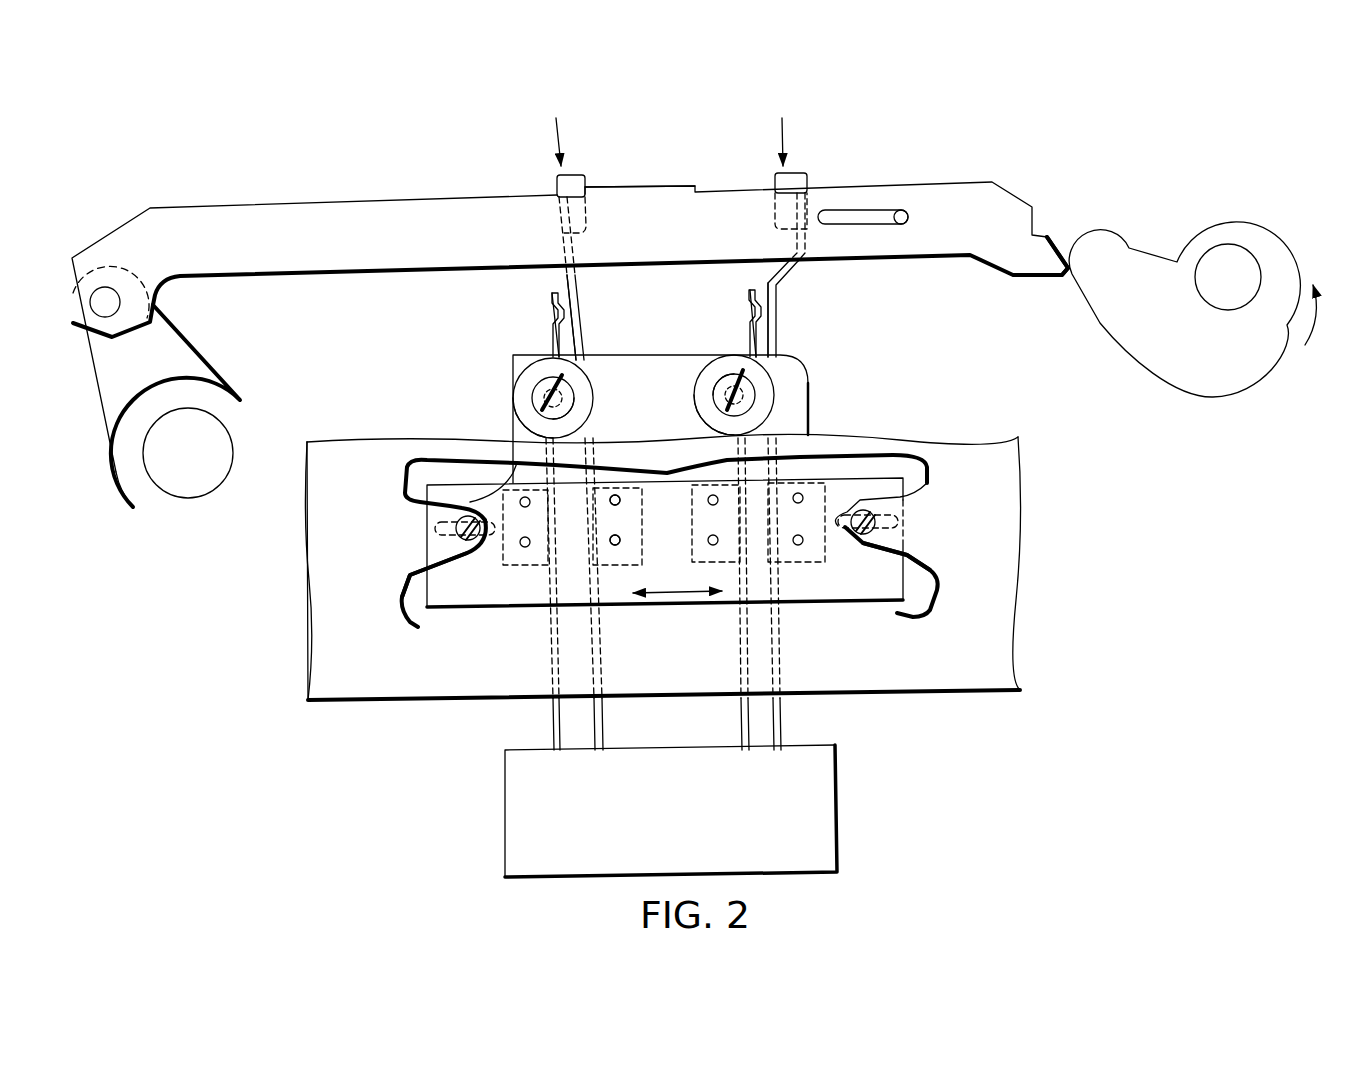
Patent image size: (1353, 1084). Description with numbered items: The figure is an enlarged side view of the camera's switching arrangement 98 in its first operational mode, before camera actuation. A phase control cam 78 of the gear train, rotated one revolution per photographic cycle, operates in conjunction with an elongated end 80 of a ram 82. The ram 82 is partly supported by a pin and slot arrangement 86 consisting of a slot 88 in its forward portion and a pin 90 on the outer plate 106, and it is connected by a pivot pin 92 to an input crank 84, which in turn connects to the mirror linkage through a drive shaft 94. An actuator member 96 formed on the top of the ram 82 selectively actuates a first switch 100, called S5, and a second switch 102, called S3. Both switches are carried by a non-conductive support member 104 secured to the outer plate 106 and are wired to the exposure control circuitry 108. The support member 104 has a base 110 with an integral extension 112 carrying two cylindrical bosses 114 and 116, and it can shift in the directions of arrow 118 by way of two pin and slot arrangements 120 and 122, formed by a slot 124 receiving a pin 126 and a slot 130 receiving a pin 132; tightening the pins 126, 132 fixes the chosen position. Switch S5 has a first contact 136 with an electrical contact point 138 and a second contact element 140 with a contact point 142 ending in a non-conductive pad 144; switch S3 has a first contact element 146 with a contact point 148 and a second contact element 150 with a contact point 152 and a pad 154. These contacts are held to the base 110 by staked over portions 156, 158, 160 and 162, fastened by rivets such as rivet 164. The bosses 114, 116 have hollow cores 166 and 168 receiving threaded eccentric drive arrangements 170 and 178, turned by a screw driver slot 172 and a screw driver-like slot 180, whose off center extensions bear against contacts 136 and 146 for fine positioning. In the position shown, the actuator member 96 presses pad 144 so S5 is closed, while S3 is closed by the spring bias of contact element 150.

The phase control cam 78 is at (1240, 383).
The elongated end 80 is at (1050, 262).
The ram 82 is at (428, 205).
The input crank 84 is at (188, 365).
The pin and slot arrangement 86 is at (860, 182).
The slot 88 is at (846, 218).
The pin 90 is at (905, 221).
The pivot pin 92 is at (105, 302).
The drive shaft 94 is at (217, 442).
The actuator member 96 is at (635, 187).
The switching arrangement 98 is at (287, 570).
The first switch 100 is at (543, 318).
The second switch 102 is at (783, 318).
The support member 104 is at (888, 489).
The outer plate 106 is at (1000, 618).
The exposure control circuitry 108 is at (823, 778).
The base 110 is at (487, 598).
The extension 112 is at (800, 407).
The boss 114 is at (532, 370).
The boss 116 is at (722, 363).
The arrow 118 is at (673, 594).
The pin and slot arrangement 120 is at (460, 563).
The pin and slot arrangement 122 is at (867, 552).
The slot 124 is at (492, 542).
The pin 126 is at (467, 517).
The slot 130 is at (853, 513).
The pin 132 is at (847, 533).
The first contact 136 is at (547, 618).
The electrical contact point 138 is at (553, 310).
The second contact element 140 is at (600, 632).
The electrical contact point 142 is at (567, 313).
The electrically non-conductive pad 144 is at (570, 175).
The first contact element 146 is at (738, 637).
The electrical contact point 148 is at (748, 310).
The second contact element 150 is at (787, 633).
The electrical contact point 152 is at (770, 310).
The electrically non-conductive pad 154 is at (790, 173).
The staked over portion 156 is at (537, 565).
The staked over portion 158 is at (633, 562).
The staked over portion 160 is at (737, 560).
The staked over portion 162 is at (808, 560).
The rivet 164 is at (640, 538).
The hollow core 166 is at (573, 385).
The hollow core 168 is at (750, 388).
The eccentric drive arrangement 170 is at (575, 418).
The screw driver slot 172 is at (540, 413).
The eccentric drive arrangement 178 is at (717, 395).
The screw driver-like slot 180 is at (722, 418).